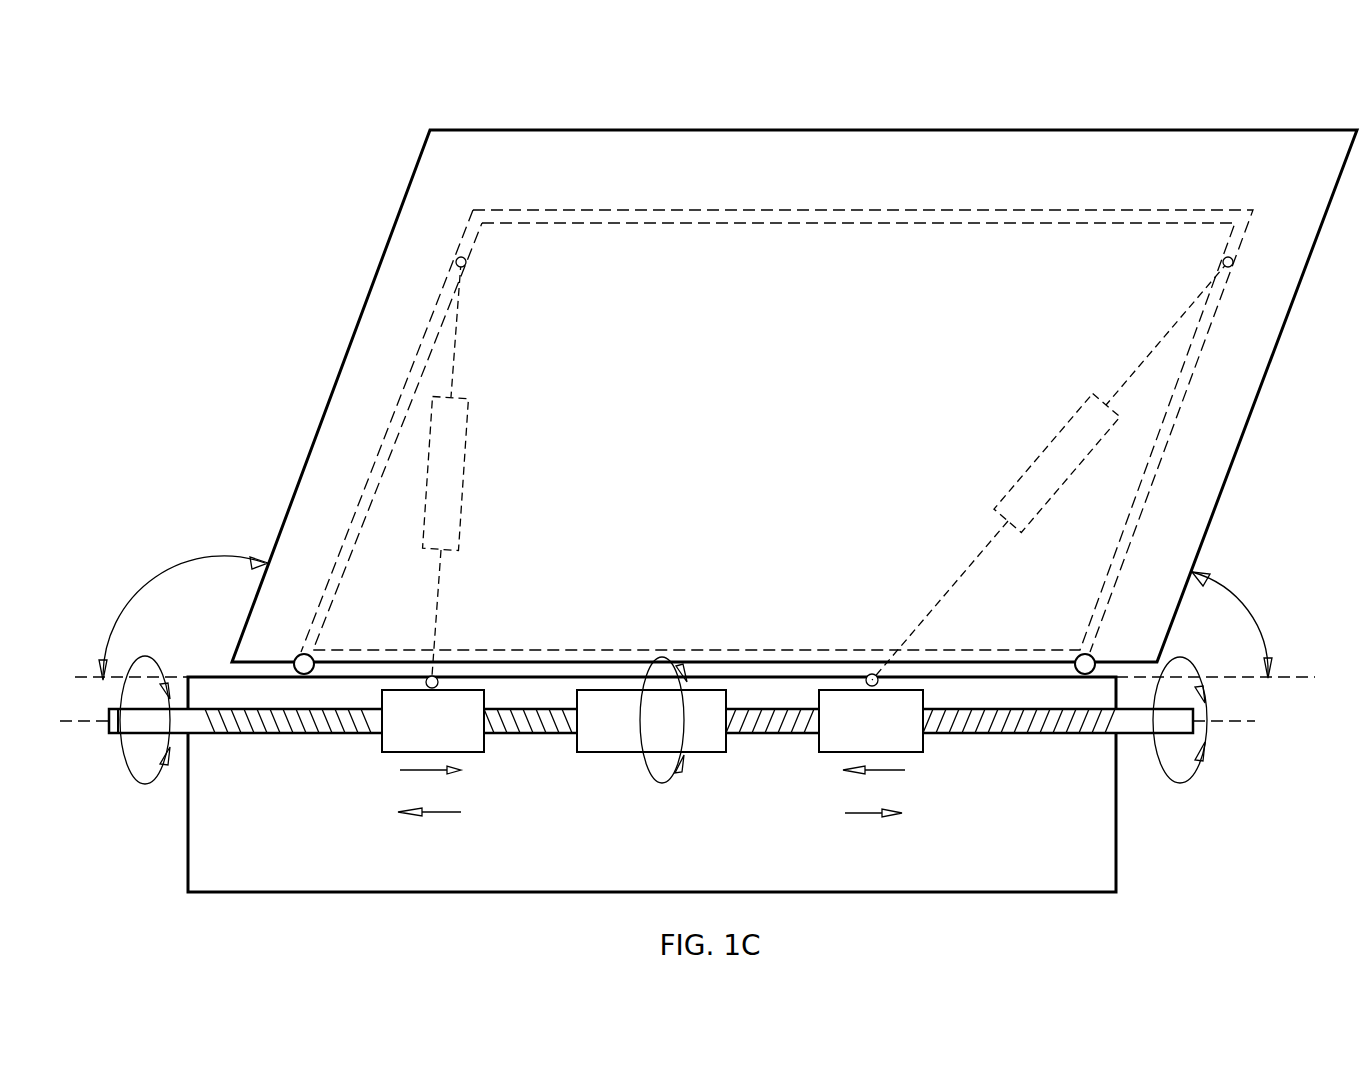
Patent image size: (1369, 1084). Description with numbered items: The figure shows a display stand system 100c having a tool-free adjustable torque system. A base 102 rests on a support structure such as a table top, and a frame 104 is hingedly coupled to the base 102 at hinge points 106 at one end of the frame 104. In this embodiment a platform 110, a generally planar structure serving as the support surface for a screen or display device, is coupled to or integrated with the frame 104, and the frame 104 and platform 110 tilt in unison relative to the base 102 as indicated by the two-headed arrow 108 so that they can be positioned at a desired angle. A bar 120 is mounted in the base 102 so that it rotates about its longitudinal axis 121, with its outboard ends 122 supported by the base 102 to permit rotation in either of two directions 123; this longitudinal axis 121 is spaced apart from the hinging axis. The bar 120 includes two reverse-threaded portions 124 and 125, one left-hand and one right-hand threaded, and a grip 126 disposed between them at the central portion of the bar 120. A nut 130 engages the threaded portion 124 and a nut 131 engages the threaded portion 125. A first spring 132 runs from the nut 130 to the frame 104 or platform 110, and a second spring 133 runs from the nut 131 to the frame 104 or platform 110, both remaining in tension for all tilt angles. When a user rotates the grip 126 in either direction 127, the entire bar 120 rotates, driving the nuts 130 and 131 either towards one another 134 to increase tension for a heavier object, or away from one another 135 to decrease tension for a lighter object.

The display stand system 100c is at (324, 183).
The base 102 is at (1073, 868).
The frame 104 is at (698, 210).
The hinge points 106 is at (310, 652).
The tilting movement 108 is at (137, 592).
The platform 110 is at (540, 160).
The bar 120 is at (801, 757).
The longitudinal axis 121 is at (65, 728).
The outboard ends 122 is at (175, 725).
The rotational directions 123 is at (127, 763).
The threaded portion 124 is at (273, 728).
The threaded portion 125 is at (773, 728).
The grip 126 is at (595, 740).
The rotation directions of grip 127 is at (655, 783).
The nut 130 is at (455, 690).
The nut 131 is at (870, 674).
The first spring 132 is at (465, 470).
The second spring 133 is at (1042, 453).
The arrows indicating nut movement toward one another 134 is at (400, 770).
The arrows indicating nut movement away from one another 135 is at (440, 813).